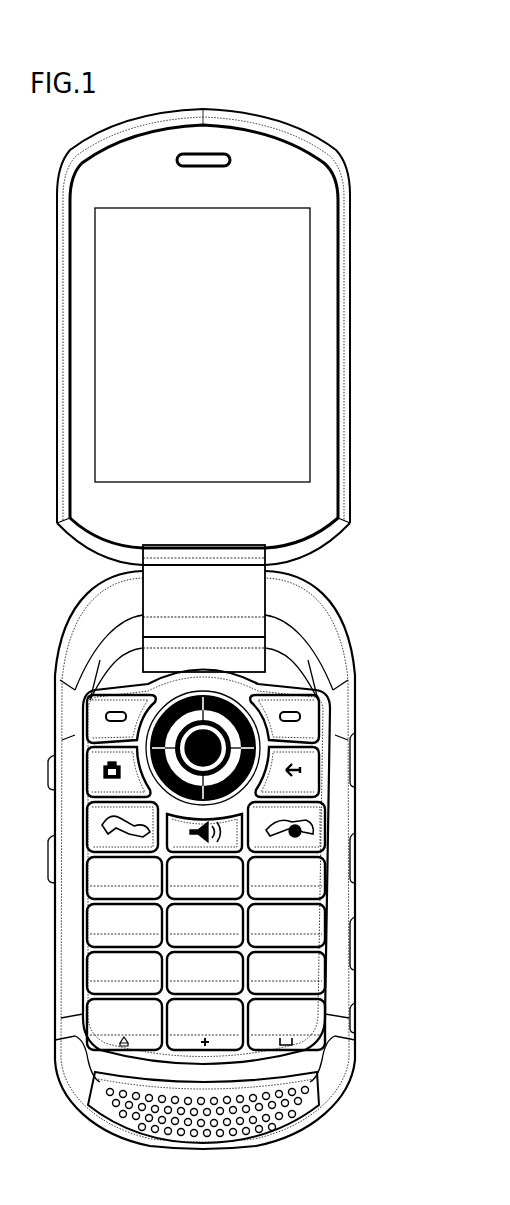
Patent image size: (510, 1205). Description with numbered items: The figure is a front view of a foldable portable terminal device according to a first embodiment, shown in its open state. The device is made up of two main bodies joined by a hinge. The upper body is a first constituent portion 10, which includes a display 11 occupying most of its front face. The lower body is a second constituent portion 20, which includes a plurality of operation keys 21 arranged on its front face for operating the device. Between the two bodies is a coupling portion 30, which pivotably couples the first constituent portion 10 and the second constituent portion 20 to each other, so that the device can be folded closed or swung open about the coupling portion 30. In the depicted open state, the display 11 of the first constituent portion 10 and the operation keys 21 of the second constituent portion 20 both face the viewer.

The first constituent portion 10 is at (352, 383).
The display 11 is at (310, 317).
The second constituent portion 20 is at (355, 798).
The operation keys 21 is at (307, 832).
The coupling portion 30 is at (233, 592).